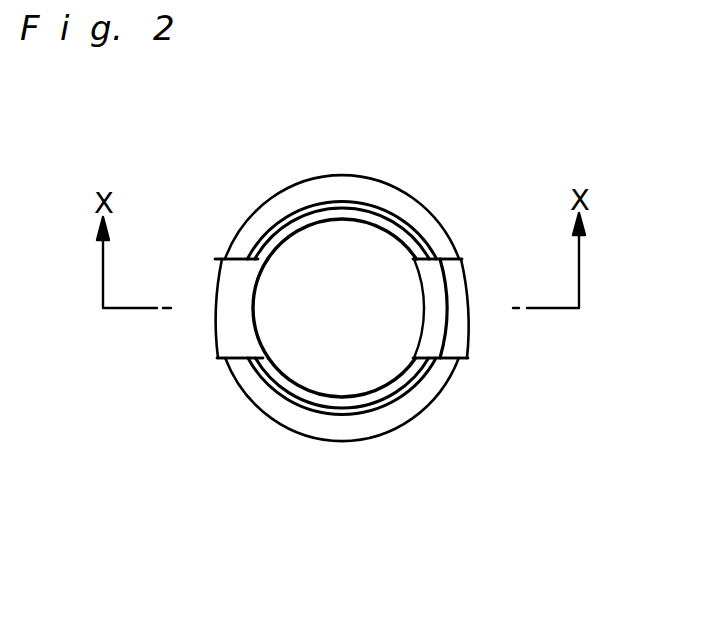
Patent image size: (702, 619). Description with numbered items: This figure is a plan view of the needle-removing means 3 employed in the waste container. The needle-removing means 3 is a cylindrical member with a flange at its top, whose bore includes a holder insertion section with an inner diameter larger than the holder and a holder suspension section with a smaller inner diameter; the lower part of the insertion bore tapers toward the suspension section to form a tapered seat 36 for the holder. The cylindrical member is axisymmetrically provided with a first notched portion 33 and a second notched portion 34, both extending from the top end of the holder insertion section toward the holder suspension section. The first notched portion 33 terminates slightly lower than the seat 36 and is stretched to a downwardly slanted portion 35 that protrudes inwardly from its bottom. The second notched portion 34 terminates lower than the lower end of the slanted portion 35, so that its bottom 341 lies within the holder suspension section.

The needle-removing means 3 is at (345, 173).
The first notched portion 33 is at (473, 312).
The second notched portion 34 is at (216, 320).
The bottom of the second notched portion 341 is at (237, 332).
The downwardly slanted portion 35 is at (434, 313).
The tapered seat 36 is at (401, 231).